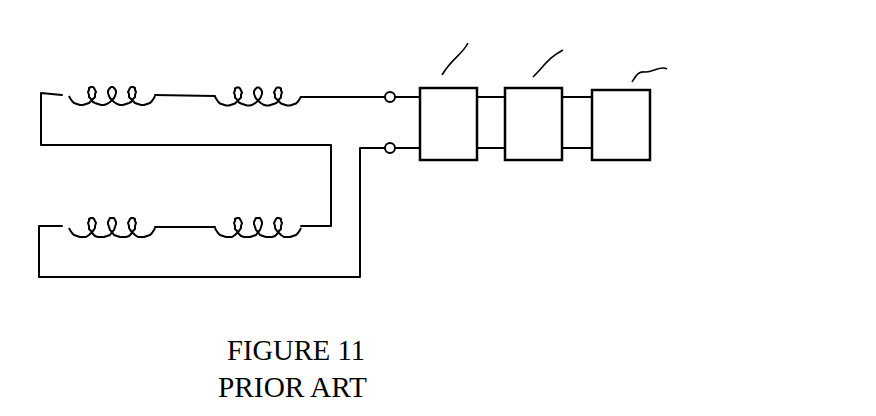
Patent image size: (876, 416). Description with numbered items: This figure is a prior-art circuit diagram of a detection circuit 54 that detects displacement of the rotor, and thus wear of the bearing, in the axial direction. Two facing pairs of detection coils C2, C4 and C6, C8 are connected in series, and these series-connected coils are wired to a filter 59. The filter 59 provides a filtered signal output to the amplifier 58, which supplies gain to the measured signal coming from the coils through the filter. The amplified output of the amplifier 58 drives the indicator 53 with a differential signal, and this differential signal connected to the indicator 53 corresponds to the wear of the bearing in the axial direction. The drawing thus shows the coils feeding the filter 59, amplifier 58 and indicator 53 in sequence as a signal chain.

The detection coil C2 is at (113, 88).
The detection coil C4 is at (116, 213).
The detection coil C6 is at (262, 88).
The detection coil C8 is at (260, 215).
The detection circuit 54 is at (369, 78).
The filter 59 is at (455, 160).
The amplifier 58 is at (537, 160).
The indicator 53 is at (623, 162).